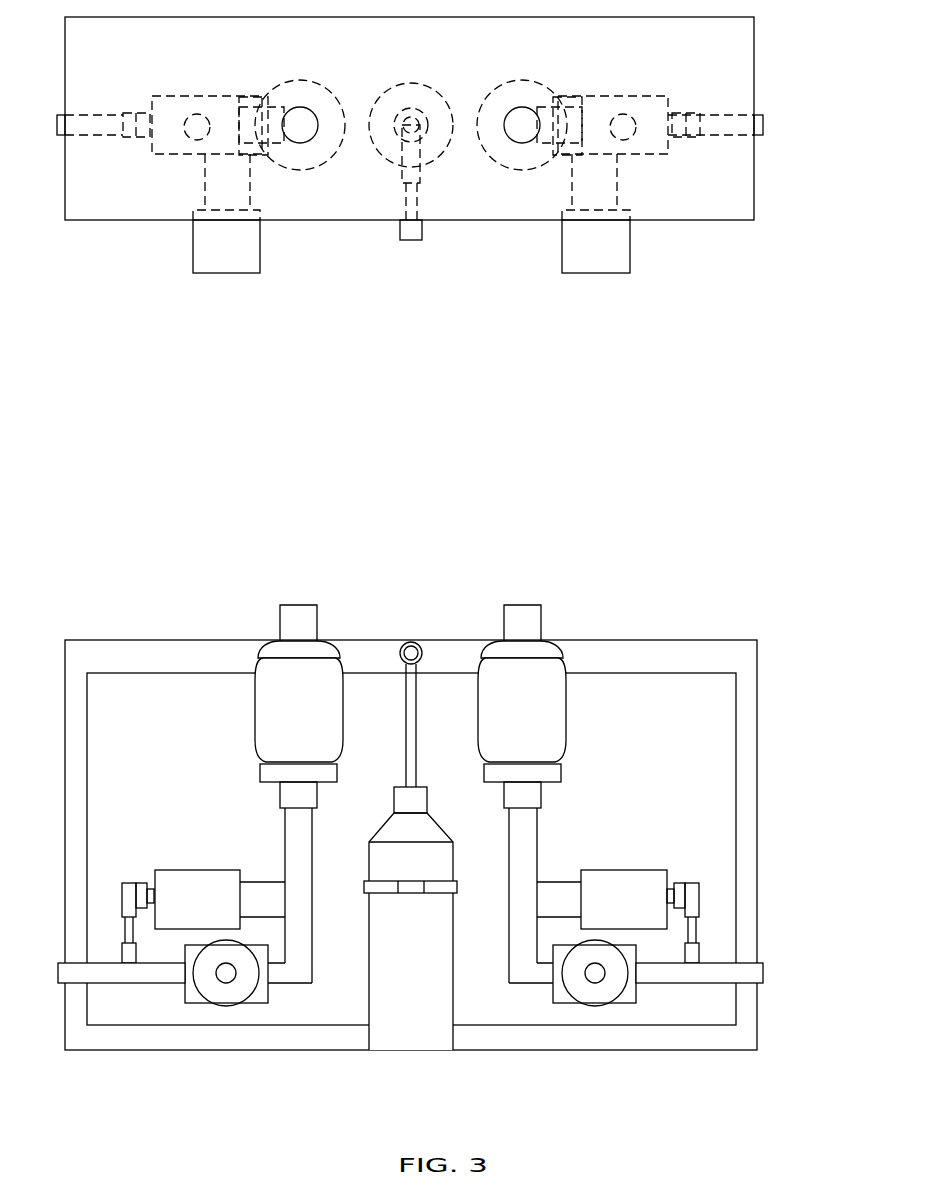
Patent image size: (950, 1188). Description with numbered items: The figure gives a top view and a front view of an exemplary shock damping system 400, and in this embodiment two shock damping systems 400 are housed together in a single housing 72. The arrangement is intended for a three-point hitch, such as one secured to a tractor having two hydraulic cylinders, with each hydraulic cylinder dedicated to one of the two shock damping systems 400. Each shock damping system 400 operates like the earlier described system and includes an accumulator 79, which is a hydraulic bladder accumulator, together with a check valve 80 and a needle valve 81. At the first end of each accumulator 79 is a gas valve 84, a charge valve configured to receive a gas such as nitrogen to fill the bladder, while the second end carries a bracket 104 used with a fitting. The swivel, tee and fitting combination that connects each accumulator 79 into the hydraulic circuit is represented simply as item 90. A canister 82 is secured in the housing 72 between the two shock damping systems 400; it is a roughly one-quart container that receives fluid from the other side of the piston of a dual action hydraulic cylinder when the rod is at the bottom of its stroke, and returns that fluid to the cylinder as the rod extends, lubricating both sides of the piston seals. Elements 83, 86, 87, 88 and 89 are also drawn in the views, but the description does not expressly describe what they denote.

The housing 72 is at (762, 42).
The accumulator 79 is at (328, 92).
The check valve 80 is at (172, 110).
The needle valve 81 is at (205, 184).
The canister 82 is at (428, 990).
The pump head 83 is at (225, 250).
The gas valve 84 is at (317, 133).
The collar 86 is at (410, 888).
The inlet pipe 87 is at (68, 972).
The outlet pipe 88 is at (755, 972).
The vent rod 89 is at (412, 233).
The swivel, tee and fitting assembly 90 is at (313, 833).
The bracket 104 is at (272, 775).
The shock damping system 400 is at (429, 549).